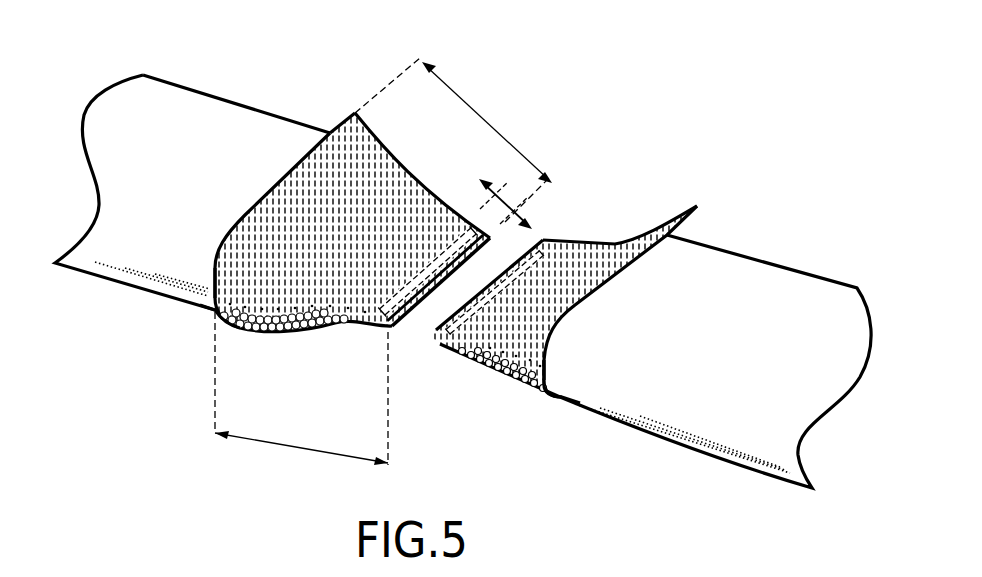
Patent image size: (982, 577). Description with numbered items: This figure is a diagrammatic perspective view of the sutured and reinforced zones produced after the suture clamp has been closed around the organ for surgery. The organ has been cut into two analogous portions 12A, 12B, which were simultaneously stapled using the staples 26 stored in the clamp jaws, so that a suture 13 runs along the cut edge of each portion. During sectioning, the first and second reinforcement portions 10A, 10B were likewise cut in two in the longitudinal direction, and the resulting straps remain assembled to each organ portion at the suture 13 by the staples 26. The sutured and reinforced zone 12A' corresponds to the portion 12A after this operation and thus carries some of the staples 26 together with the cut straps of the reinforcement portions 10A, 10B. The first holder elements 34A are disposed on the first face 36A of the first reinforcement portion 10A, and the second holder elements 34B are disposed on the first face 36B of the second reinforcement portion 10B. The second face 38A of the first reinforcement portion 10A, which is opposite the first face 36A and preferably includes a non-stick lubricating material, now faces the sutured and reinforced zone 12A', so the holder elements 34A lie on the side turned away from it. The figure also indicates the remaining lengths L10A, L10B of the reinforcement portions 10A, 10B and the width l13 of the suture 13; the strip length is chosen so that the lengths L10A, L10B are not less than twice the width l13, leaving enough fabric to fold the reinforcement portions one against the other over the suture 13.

The portion of the organ 12A is at (192, 176).
The portion of the organ 12B is at (770, 277).
The sutured and reinforced zone 12A' is at (439, 326).
The first reinforcement portion 10A is at (343, 130).
The second reinforcement portion 10B is at (267, 330).
The suture 13 is at (402, 278).
The staples 26 is at (462, 215).
The first holder elements 34A is at (297, 183).
The second holder elements 34B is at (230, 316).
The first face of the first reinforcement portion 36A is at (378, 188).
The first face of the second reinforcement portion 36B is at (340, 342).
The second face of the first reinforcement portion 38A is at (205, 259).
The length of the first reinforcement portion L10A is at (487, 117).
The length of the second reinforcement portion L10B is at (301, 388).
The width of the suture l13 is at (515, 197).